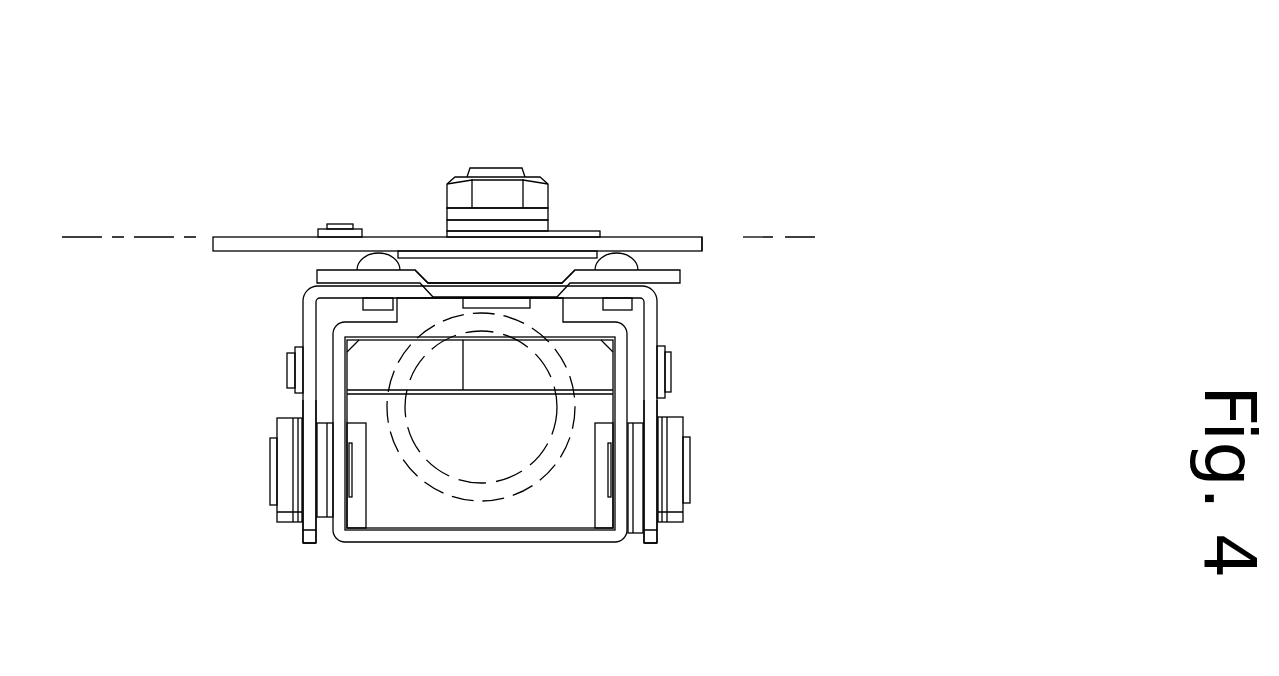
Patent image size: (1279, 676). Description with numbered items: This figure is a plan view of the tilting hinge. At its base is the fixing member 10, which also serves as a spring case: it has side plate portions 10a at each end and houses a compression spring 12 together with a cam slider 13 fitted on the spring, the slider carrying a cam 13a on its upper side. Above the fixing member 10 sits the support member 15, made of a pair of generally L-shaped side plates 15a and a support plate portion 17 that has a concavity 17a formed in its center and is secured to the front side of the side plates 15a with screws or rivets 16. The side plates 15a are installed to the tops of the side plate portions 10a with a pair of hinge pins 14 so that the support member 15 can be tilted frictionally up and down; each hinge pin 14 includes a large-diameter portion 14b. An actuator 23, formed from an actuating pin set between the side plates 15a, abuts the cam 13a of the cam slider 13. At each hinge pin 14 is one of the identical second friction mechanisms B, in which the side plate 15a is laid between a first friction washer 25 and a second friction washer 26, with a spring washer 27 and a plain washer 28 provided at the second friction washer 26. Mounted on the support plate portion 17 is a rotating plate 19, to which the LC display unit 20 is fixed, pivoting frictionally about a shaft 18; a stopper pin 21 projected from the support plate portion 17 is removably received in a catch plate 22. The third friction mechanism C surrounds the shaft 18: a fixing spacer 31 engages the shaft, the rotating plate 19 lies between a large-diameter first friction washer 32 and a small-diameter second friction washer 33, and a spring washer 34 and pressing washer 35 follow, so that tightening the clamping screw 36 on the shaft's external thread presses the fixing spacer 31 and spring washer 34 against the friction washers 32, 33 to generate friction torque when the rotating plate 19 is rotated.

The fixing member 10 is at (561, 543).
The side plate portions 10a is at (338, 372).
The compression spring 12 is at (493, 505).
The cam slider 13 is at (440, 517).
The cam 13a is at (343, 335).
The hinge pins 14 is at (277, 462).
The large-diameter portion 14b is at (327, 508).
The support member 15 is at (293, 323).
The side plates 15a is at (303, 412).
The screws or rivets 16 is at (378, 262).
The support plate portion 17 is at (410, 273).
The concavity 17a is at (460, 277).
The shaft 18 is at (480, 304).
The rotating plate 19 is at (693, 243).
The LC display unit 20 is at (789, 227).
The stopper pin 21 is at (335, 226).
The catch plate 22 is at (357, 228).
The actuator 23 is at (473, 377).
The first friction washer 25 is at (320, 520).
The second friction washer 26 is at (300, 532).
The spring washer 27 is at (297, 498).
The plain washer 28 is at (278, 515).
The fixing spacer 31 is at (586, 262).
The first friction washer 32 is at (564, 234).
The second friction washer 33 is at (468, 236).
The spring washer 34 is at (474, 226).
The pressing washer 35 is at (536, 218).
The clamping screw 36 is at (508, 193).
The second friction mechanisms B is at (273, 532).
The third friction mechanism C is at (447, 176).